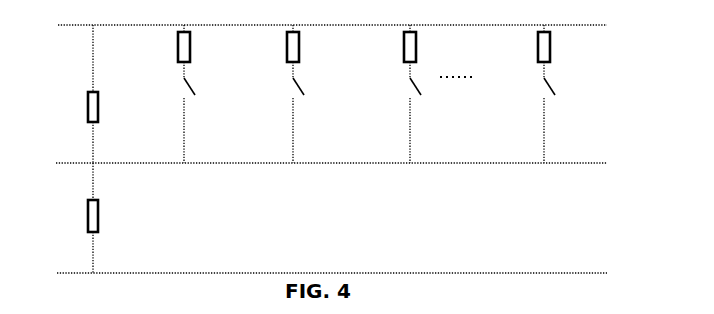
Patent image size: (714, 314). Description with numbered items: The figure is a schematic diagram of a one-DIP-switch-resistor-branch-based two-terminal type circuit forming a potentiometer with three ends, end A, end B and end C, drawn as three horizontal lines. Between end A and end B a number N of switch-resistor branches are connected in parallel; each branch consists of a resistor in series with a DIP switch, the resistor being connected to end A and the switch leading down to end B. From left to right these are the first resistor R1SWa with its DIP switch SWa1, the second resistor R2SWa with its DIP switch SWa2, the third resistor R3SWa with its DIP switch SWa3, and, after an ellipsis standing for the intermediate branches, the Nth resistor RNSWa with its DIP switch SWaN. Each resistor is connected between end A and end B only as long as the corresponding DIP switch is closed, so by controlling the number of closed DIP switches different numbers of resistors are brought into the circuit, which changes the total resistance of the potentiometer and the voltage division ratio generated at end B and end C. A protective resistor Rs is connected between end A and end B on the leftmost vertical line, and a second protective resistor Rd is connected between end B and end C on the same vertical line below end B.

The end A is at (323, 29).
The end B is at (324, 150).
The end C is at (324, 260).
The protective resistor Rs is at (78, 94).
The protective resistor Rd is at (78, 218).
The resistor R1SWa is at (160, 43).
The DIP switch SWa1 is at (162, 112).
The resistor R2SWa is at (268, 43).
The DIP switch SWa2 is at (271, 112).
The resistor R3SWa is at (386, 43).
The DIP switch SWa3 is at (388, 112).
The resistor RNSWa is at (520, 43).
The DIP switch SWaN is at (522, 112).